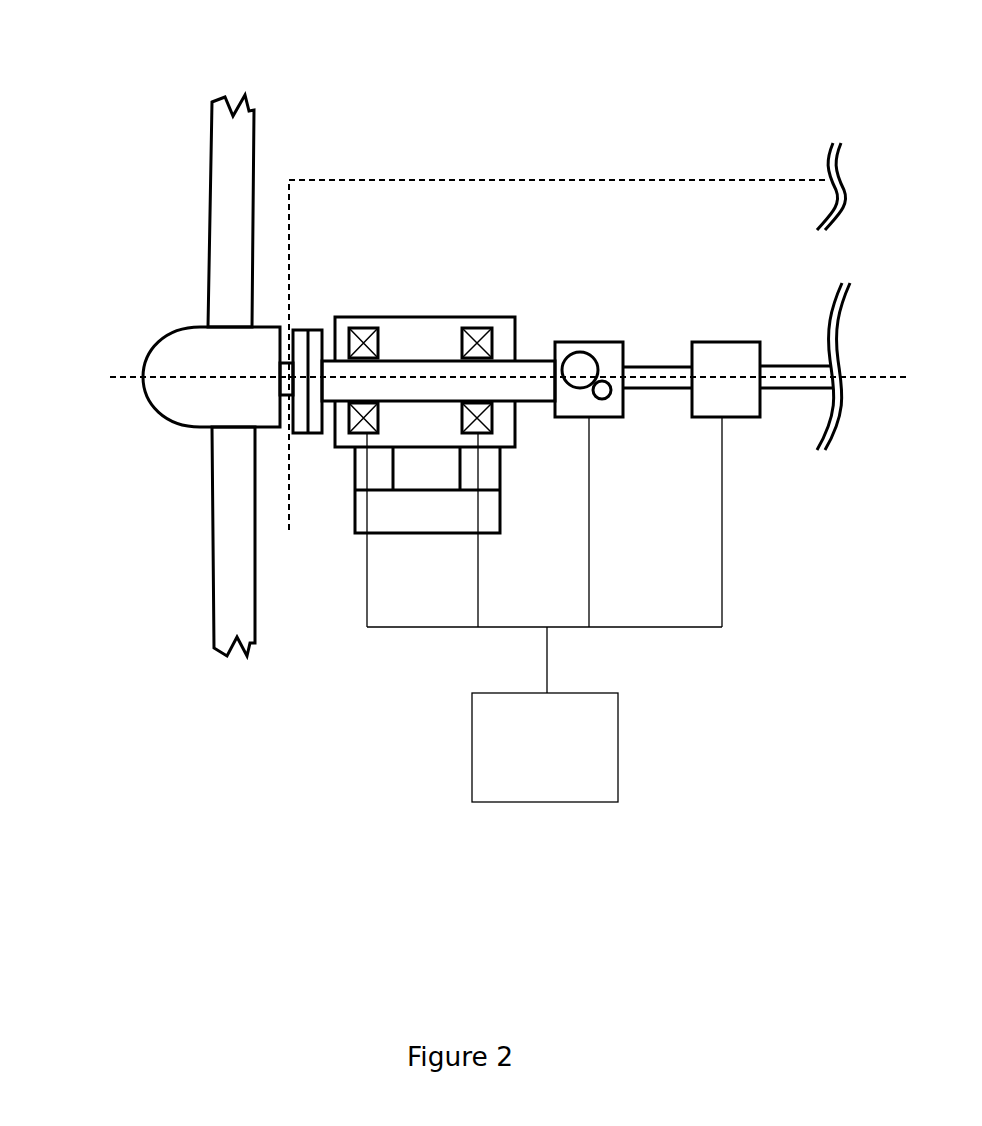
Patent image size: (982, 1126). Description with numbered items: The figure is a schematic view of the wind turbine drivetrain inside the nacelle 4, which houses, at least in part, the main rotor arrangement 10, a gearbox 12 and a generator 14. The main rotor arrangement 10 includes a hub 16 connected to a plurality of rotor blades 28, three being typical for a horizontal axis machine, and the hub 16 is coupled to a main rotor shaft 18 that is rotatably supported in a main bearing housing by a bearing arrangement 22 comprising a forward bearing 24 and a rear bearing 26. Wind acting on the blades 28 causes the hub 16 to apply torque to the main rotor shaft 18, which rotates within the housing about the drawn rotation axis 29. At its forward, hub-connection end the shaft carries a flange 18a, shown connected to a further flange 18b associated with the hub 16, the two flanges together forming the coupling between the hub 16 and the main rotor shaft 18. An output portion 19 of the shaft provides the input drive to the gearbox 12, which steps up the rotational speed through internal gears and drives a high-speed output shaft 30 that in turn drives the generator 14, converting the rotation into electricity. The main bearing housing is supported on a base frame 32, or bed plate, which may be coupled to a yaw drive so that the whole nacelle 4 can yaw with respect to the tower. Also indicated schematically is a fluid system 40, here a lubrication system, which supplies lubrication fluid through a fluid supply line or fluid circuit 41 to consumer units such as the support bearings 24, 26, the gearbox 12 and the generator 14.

The main rotor arrangement 10 is at (140, 108).
The nacelle 4 is at (583, 180).
The rotation axis 29 is at (120, 380).
The rotor blades 28 is at (226, 244).
The hub 16 is at (205, 393).
The bearing arrangement 22 is at (519, 455).
The flange 18a is at (320, 330).
The further flange 18b is at (300, 435).
The main rotor shaft 18 is at (417, 358).
The output portion 19 is at (543, 358).
The forward bearing 24 is at (367, 330).
The rear bearing 26 is at (482, 330).
The base frame 32 is at (442, 532).
The gearbox 12 is at (578, 417).
The gearbox output shaft 30 is at (652, 362).
The generator 14 is at (722, 417).
The fluid supply line 41 is at (722, 565).
The fluid system 40 is at (618, 745).